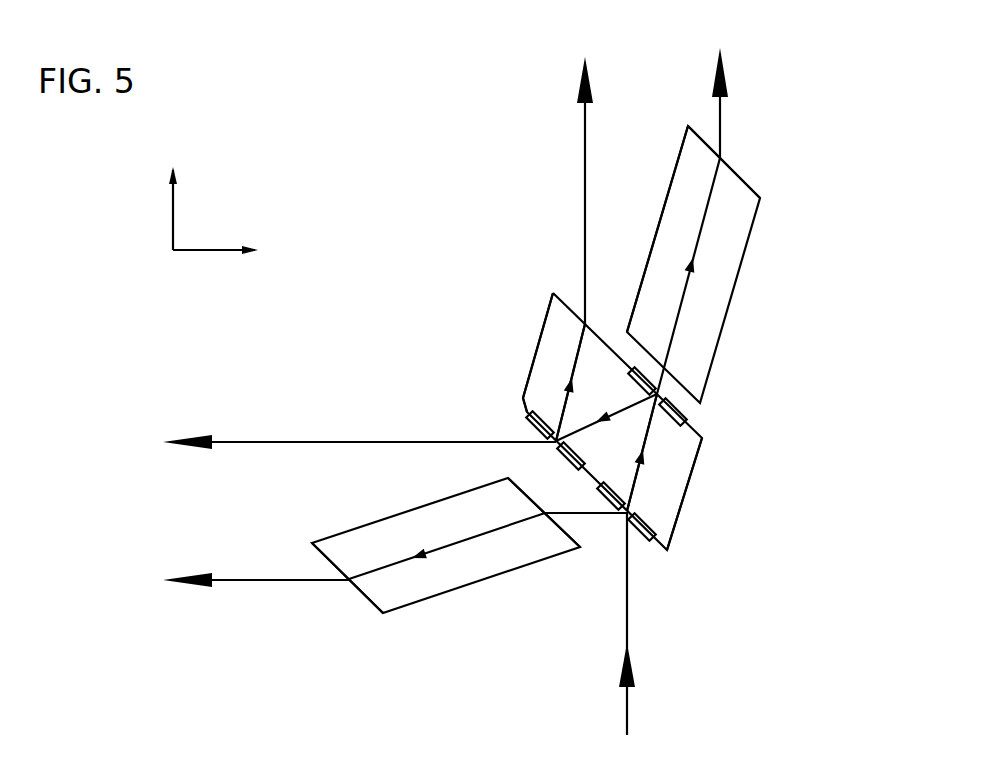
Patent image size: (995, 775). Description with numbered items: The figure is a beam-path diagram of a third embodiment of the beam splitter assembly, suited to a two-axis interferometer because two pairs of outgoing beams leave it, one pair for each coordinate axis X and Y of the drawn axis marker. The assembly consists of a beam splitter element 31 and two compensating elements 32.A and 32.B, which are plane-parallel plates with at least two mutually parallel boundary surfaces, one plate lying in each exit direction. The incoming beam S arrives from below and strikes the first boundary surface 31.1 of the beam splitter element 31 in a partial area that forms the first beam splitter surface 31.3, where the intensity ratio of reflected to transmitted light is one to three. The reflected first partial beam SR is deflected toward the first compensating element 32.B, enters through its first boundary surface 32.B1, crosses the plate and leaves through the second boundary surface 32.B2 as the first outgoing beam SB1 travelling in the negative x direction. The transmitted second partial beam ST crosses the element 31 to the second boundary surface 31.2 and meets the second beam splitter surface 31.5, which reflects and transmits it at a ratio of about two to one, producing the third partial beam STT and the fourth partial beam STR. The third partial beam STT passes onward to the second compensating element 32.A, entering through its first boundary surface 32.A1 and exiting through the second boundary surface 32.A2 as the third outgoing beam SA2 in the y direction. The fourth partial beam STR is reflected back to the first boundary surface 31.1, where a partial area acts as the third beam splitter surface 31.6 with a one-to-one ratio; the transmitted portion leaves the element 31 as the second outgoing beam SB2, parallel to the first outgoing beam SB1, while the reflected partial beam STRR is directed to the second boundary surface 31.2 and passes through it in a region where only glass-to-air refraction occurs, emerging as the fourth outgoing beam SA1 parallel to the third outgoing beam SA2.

The beam splitter element 31 is at (700, 533).
The first boundary surface 31.1 is at (653, 543).
The second boundary surface 31.2 is at (572, 303).
The first beam splitter surface 31.3 is at (640, 507).
The second beam splitter surface 31.5 is at (688, 406).
The third beam splitter surface 31.6 is at (527, 408).
The second compensating element 32.A is at (741, 255).
The first boundary surface of second compensating element 32.A1 is at (628, 333).
The second boundary surface of second compensating element 32.A2 is at (725, 160).
The first compensating element 32.B is at (438, 595).
The first boundary surface of first compensating element 32.B1 is at (562, 532).
The second boundary surface of first compensating element 32.B2 is at (355, 587).
The incoming beam S is at (630, 713).
The second partial beam ST is at (650, 447).
The third partial beam STT is at (690, 248).
The fourth partial beam STR is at (609, 410).
The partial beam reflected off third beam splitter surface STRR is at (585, 343).
The first partial beam SR is at (583, 513).
The fourth outgoing beam SA1 is at (583, 125).
The third outgoing beam SA2 is at (722, 107).
The first outgoing beam SB1 is at (250, 580).
The second outgoing beam SB2 is at (278, 443).
The x coordinate axis X is at (215, 269).
The y coordinate axis Y is at (184, 201).